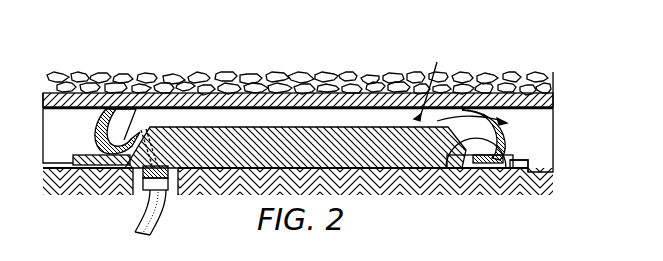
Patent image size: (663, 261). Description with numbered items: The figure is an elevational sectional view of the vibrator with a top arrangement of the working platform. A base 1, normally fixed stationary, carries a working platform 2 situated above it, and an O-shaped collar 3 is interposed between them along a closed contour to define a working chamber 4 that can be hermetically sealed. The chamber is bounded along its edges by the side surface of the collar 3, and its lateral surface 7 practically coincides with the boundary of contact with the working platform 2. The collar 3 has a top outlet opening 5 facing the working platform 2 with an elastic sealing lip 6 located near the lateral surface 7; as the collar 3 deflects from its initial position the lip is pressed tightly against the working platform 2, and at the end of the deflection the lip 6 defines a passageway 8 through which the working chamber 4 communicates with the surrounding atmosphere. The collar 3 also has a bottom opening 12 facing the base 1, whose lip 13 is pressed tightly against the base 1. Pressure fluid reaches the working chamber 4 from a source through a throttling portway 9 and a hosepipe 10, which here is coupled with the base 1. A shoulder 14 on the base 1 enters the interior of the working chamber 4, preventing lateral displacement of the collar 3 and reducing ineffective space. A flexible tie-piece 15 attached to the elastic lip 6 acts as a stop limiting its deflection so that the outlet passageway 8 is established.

The base 1 is at (77, 182).
The working platform 2 is at (74, 92).
The collar 3 is at (107, 117).
The working chamber 4 is at (130, 127).
The outlet opening 5 is at (429, 81).
The elastic sealing lip 6 is at (440, 166).
The lateral surface 7 is at (512, 166).
The passageway 8 is at (482, 114).
The throttling portway 9 is at (150, 130).
The hosepipe 10 is at (156, 225).
The bottom opening 12 is at (462, 166).
The lip 13 is at (485, 166).
The shoulder 14 is at (107, 182).
The flexible tie-piece 15 is at (508, 148).